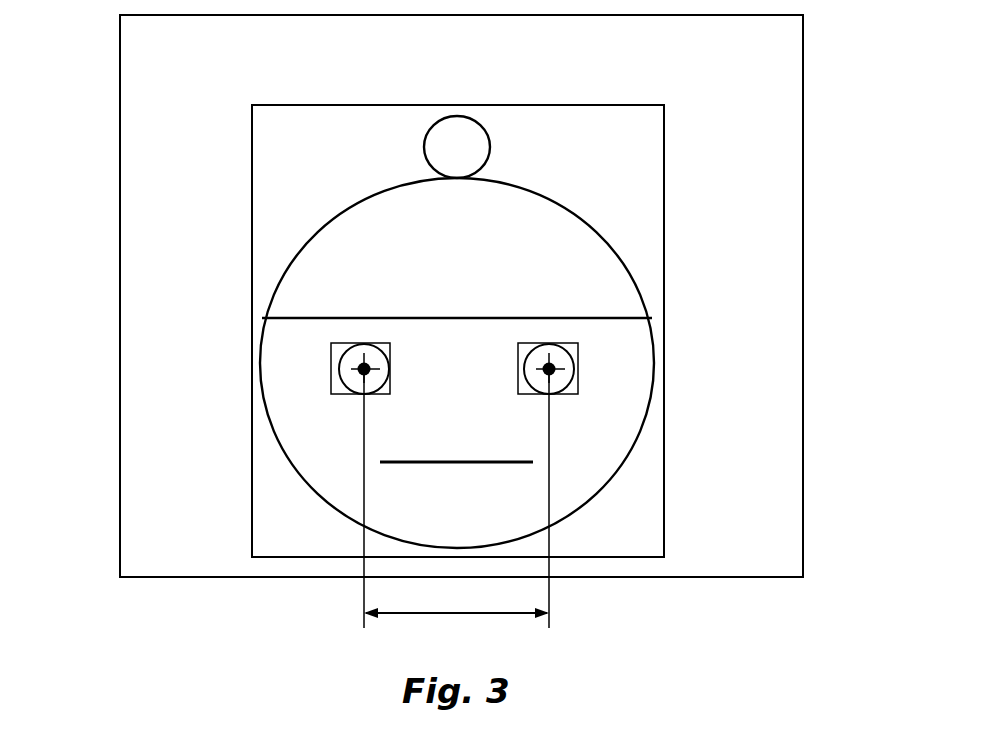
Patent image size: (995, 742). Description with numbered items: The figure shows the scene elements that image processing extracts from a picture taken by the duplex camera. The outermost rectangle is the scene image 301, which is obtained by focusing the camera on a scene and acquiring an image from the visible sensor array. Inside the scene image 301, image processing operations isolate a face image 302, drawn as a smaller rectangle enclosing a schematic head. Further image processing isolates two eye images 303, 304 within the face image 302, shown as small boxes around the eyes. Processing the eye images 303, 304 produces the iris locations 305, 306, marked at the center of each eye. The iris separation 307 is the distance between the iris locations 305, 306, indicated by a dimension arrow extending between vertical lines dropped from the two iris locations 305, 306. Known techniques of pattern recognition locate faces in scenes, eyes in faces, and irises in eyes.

The scene image 301 is at (204, 73).
The face image 302 is at (334, 166).
The eye image 303 is at (331, 348).
The eye image 304 is at (578, 350).
The iris location 305 is at (358, 371).
The iris location 306 is at (556, 372).
The iris separation 307 is at (482, 613).